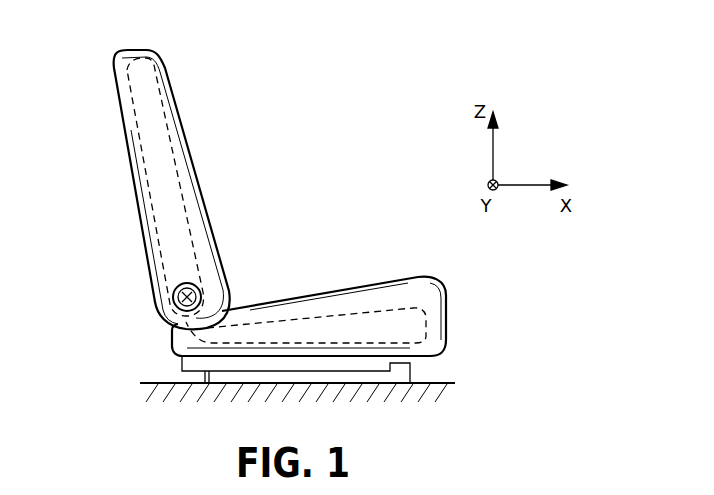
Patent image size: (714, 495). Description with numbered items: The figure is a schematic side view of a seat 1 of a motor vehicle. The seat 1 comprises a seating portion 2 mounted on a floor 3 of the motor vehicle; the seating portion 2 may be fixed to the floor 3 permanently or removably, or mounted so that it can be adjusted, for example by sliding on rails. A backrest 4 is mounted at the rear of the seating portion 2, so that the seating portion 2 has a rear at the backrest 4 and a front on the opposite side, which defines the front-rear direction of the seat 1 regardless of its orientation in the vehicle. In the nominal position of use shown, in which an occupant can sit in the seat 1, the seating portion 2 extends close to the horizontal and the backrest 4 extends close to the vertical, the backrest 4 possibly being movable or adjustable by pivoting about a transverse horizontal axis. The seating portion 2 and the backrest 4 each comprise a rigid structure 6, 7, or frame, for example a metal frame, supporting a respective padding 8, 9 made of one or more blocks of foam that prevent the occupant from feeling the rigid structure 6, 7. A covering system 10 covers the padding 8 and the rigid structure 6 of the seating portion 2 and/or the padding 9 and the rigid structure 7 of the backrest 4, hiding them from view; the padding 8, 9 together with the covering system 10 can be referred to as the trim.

The seat 1 is at (350, 128).
The seating portion 2 is at (371, 240).
The floor 3 is at (439, 383).
The backrest 4 is at (231, 96).
The rigid structure of the seating portion 6 is at (315, 313).
The rigid structure of the backrest 7 is at (192, 231).
The padding of the seating portion 8 is at (393, 297).
The padding of the backrest 9 is at (181, 190).
The covering system 10 is at (167, 93).